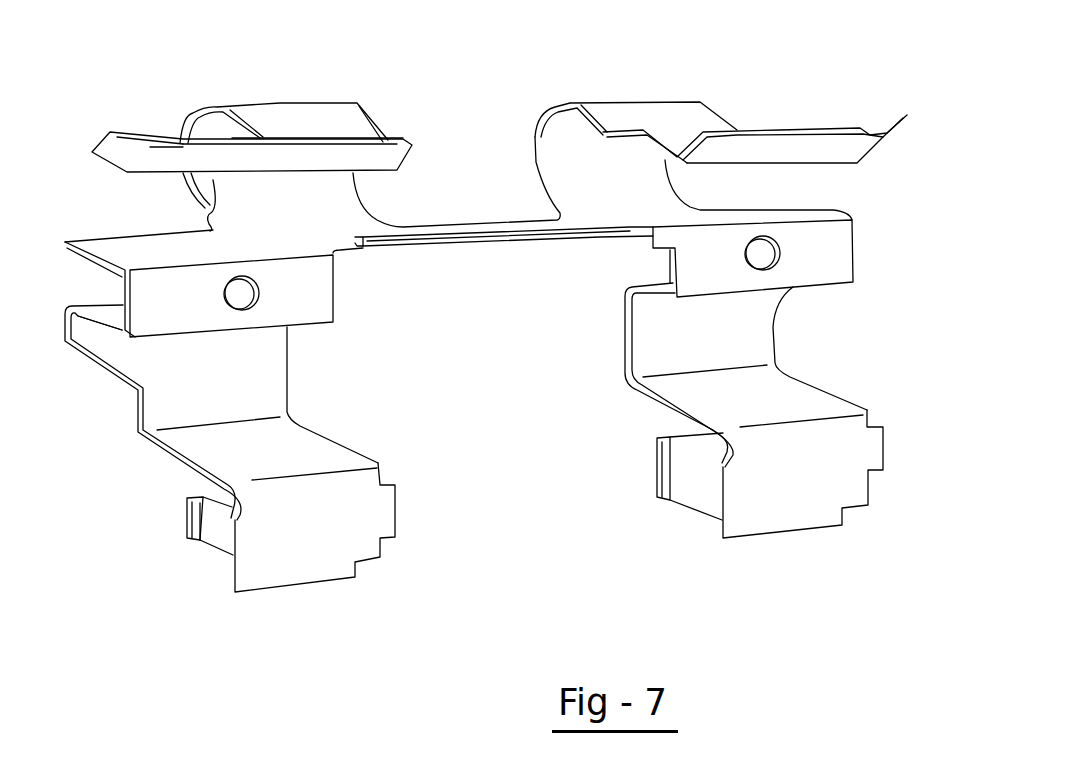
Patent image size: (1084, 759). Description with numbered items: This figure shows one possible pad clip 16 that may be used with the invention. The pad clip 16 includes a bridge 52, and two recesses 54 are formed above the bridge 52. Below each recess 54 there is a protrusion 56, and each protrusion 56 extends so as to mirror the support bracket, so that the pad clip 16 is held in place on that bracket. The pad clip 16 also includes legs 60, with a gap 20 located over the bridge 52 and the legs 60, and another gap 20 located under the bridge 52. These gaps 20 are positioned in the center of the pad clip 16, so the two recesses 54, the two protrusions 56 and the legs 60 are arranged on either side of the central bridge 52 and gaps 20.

The pad clip 16 is at (486, 347).
The gap 20 is at (486, 387).
The bridge 52 is at (487, 245).
The recess 54 is at (190, 203).
The protrusion 56 is at (317, 297).
The leg 60 is at (318, 598).